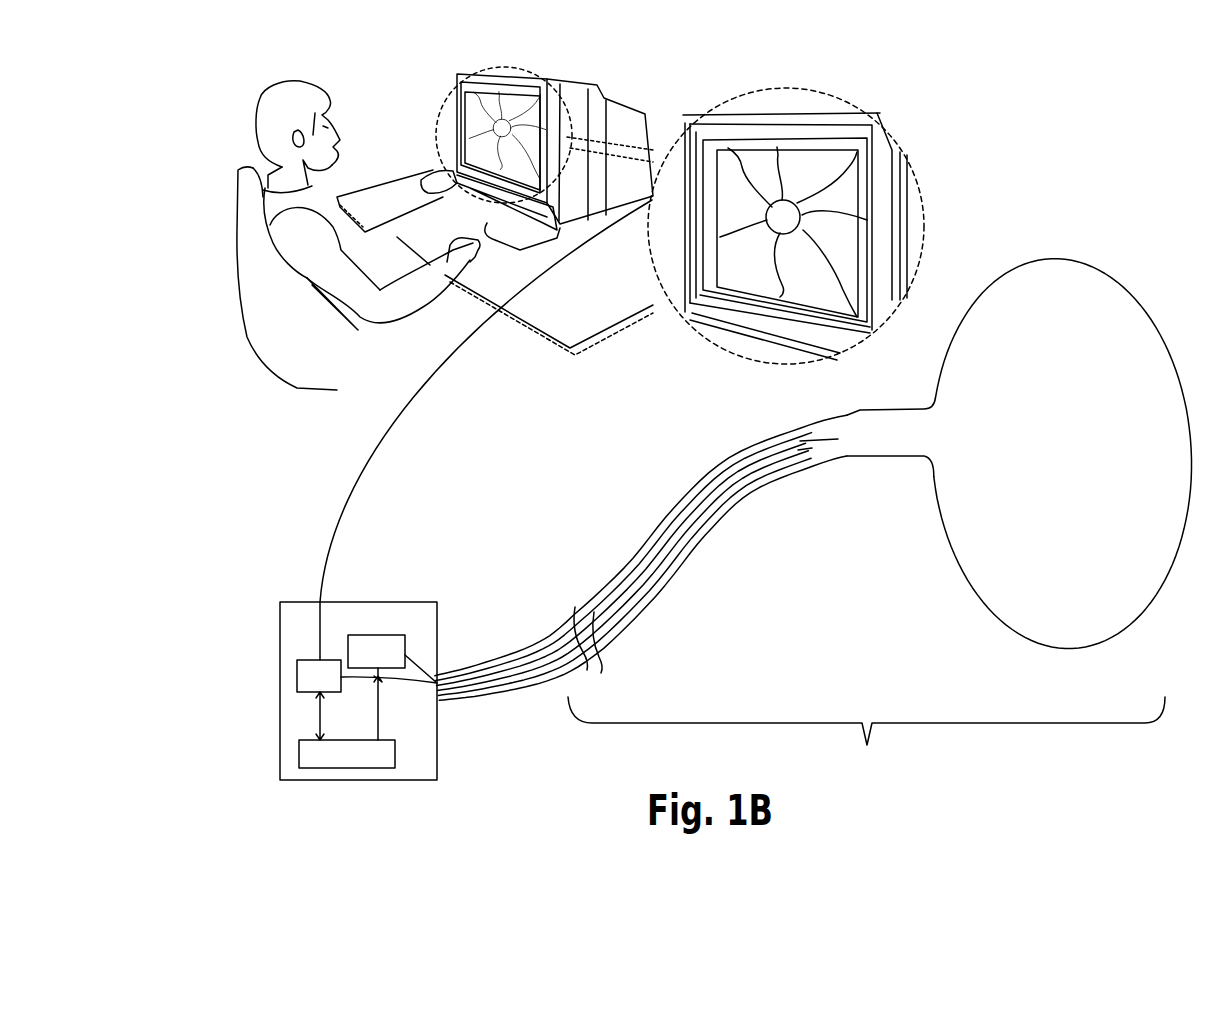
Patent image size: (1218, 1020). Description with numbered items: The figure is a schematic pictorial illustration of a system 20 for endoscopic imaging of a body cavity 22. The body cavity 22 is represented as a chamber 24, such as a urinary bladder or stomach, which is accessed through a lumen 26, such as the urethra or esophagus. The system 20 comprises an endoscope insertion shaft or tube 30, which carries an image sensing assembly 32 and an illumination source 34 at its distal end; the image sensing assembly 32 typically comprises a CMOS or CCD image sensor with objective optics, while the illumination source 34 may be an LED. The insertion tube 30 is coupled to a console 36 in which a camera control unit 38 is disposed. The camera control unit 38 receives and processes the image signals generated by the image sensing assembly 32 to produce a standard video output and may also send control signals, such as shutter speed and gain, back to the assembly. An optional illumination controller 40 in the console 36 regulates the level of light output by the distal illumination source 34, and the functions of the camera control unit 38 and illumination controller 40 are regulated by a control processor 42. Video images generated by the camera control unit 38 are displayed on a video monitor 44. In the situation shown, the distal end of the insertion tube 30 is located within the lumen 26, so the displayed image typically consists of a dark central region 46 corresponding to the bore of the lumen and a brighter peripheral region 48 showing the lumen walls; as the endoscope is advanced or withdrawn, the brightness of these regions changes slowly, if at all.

The system 20 is at (313, 455).
The body cavity 22 is at (866, 738).
The chamber 24 is at (972, 308).
The lumen 26 is at (863, 465).
The endoscope insertion shaft or tube 30 is at (743, 463).
The image sensing assembly 32 is at (800, 453).
The illumination source 34 is at (803, 437).
The console 36 is at (297, 602).
The camera control unit 38 is at (297, 673).
The illumination controller 40 is at (395, 635).
The control processor 42 is at (395, 752).
The video monitor 44 is at (535, 80).
The dark central region 46 is at (793, 232).
The brighter peripheral region 48 is at (742, 185).